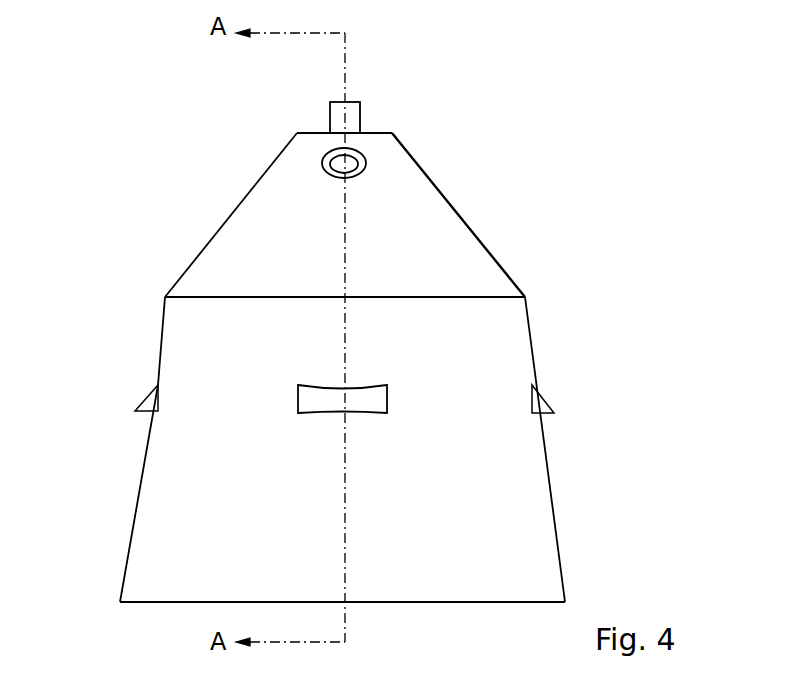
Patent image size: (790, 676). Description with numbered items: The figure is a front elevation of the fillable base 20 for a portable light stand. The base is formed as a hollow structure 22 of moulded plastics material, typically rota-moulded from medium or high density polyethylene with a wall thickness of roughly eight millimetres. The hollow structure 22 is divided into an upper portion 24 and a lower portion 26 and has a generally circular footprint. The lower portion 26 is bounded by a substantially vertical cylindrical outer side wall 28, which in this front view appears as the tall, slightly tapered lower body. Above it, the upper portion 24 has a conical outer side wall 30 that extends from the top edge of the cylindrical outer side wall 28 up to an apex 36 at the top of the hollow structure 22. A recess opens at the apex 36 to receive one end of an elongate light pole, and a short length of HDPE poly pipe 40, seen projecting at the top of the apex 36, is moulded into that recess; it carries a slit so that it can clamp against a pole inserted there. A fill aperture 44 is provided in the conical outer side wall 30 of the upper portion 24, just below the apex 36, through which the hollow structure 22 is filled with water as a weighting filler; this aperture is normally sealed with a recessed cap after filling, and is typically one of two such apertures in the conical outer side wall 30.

The fillable base 20 is at (440, 93).
The hollow structure 22 is at (147, 318).
The upper portion 24 is at (210, 216).
The lower portion 26 is at (131, 456).
The cylindrical outer side wall 28 is at (505, 336).
The conical outer side wall 30 is at (443, 225).
The apex 36 is at (266, 135).
The poly pipe 40 is at (330, 118).
The fill aperture 44 is at (378, 154).